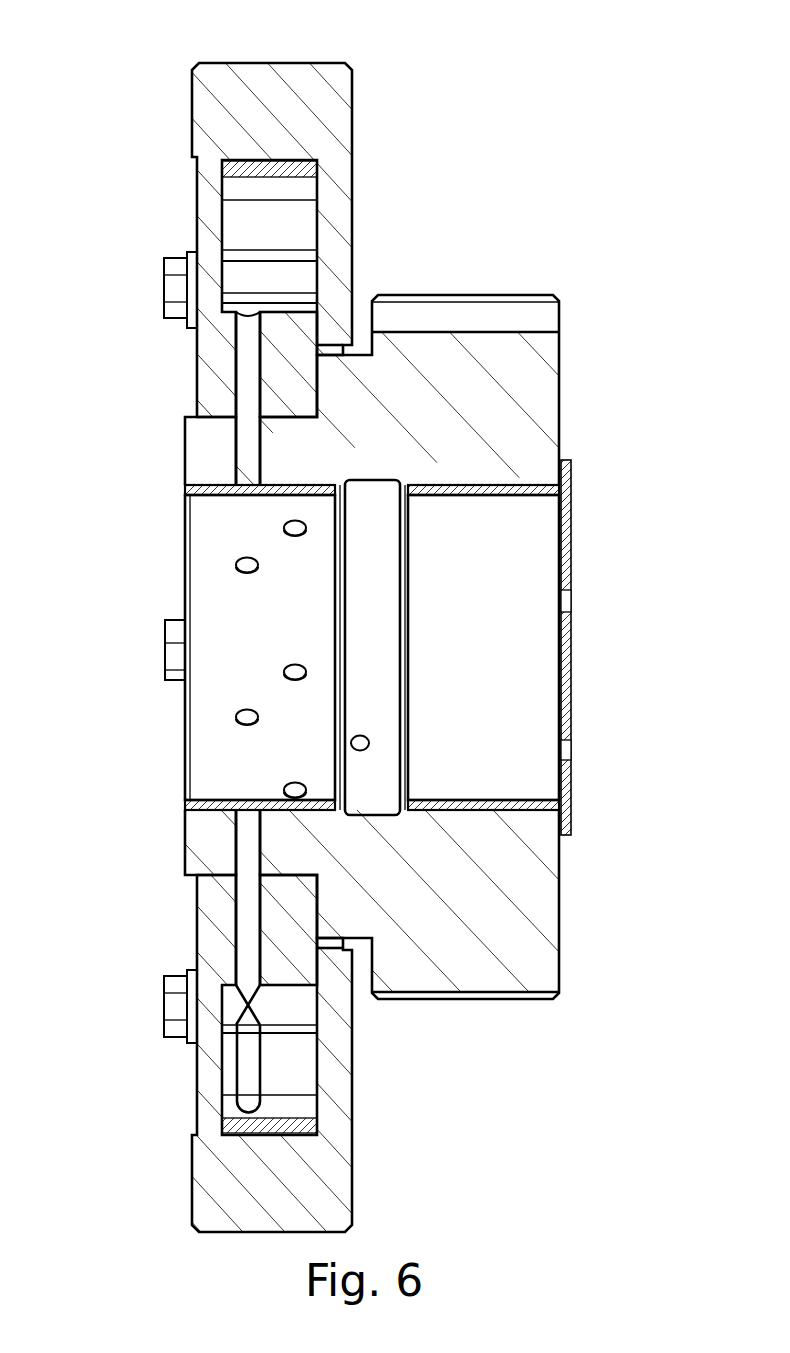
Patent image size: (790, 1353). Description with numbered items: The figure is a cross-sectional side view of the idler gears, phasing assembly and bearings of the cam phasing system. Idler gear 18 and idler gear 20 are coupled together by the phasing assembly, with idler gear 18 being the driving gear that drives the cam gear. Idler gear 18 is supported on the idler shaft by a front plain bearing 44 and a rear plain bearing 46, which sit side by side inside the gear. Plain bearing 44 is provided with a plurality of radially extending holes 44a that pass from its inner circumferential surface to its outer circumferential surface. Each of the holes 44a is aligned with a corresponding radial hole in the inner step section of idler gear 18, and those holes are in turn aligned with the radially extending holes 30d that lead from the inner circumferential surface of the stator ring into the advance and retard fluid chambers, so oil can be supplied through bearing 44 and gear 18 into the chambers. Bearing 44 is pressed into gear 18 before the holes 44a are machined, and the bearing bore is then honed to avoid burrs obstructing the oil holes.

The idler gear 20 is at (300, 104).
The idler gear 18 is at (504, 361).
The radially extending holes 30d is at (231, 455).
The front plain bearing 44 is at (261, 626).
The radially extending holes 44a is at (283, 527).
The rear plain bearing 46 is at (500, 606).